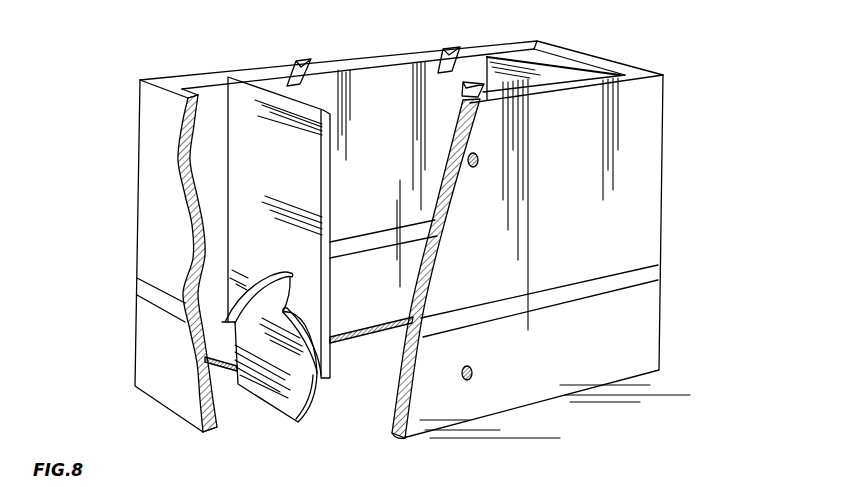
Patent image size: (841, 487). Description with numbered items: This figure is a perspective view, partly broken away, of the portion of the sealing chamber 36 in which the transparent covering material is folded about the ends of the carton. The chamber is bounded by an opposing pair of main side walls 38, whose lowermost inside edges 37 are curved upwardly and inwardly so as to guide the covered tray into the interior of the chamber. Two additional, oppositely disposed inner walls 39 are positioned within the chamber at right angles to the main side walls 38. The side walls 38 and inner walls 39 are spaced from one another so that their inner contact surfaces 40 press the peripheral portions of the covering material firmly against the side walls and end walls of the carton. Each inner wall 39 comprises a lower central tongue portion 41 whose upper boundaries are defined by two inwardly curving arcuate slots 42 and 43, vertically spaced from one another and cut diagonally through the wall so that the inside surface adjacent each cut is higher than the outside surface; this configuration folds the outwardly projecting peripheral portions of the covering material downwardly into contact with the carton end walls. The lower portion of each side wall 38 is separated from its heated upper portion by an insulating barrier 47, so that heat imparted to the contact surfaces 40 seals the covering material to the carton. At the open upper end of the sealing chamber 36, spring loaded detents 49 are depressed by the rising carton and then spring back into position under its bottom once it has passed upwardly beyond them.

The sealing chamber 36 is at (128, 143).
The lowermost inside edges 37 is at (365, 337).
The side walls 38 is at (170, 238).
The inner walls 39 is at (285, 166).
The inner contact surfaces 40 is at (385, 161).
The lower central tongue portion 41 is at (270, 393).
The arcuate slot 42 is at (312, 303).
The arcuate slot 43 is at (270, 280).
The insulating barrier 47 is at (143, 290).
The spring loaded detents 49 is at (289, 58).